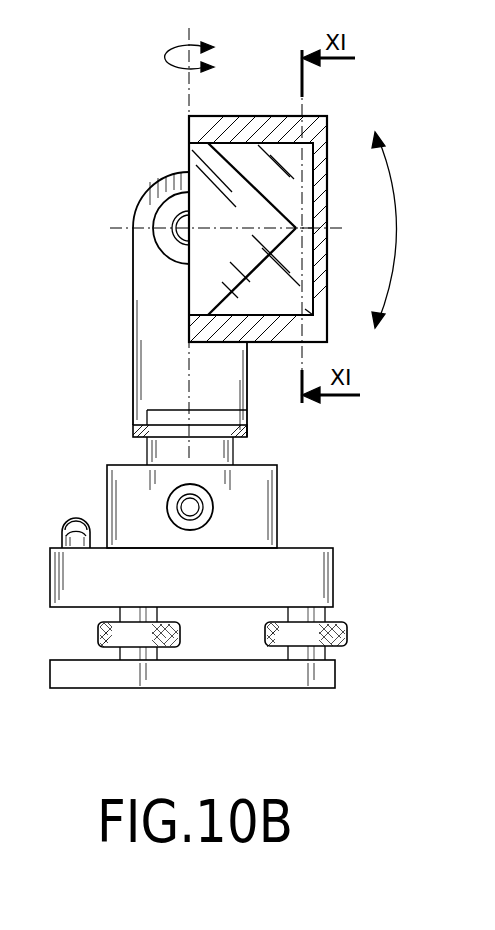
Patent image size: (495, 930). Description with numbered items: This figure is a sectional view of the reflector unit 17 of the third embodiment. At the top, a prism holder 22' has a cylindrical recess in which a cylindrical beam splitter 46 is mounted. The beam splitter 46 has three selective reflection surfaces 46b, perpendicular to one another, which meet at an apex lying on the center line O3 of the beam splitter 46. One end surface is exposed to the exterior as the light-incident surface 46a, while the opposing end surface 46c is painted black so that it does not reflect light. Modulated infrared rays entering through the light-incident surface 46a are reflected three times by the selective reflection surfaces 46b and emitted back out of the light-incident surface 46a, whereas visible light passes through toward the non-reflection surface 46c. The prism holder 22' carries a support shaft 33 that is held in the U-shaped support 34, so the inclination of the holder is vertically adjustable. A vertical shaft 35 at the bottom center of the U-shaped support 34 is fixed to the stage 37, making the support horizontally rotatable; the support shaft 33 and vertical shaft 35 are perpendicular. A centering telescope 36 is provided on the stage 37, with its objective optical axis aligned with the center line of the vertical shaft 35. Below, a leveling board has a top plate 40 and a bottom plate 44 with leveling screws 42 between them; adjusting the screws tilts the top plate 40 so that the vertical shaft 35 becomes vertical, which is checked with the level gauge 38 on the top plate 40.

The reflector unit 17 is at (406, 118).
The prism holder 22' is at (291, 209).
The support shaft 33 is at (155, 243).
The U-shaped support 34 is at (143, 332).
The vertical shaft 35 is at (233, 445).
The centering telescope 36 is at (165, 505).
The stage 37 is at (265, 510).
The level gauge 38 is at (64, 520).
The top plate 40 is at (322, 573).
The leveling screw 42 is at (98, 640).
The bottom plate 44 is at (233, 672).
The cylindrical beam splitter 46 is at (281, 318).
The light-incident surface 46a is at (189, 153).
The selective reflection surface 46b is at (231, 165).
The non-reflection surface 46c is at (316, 270).
The center line O3 is at (313, 227).